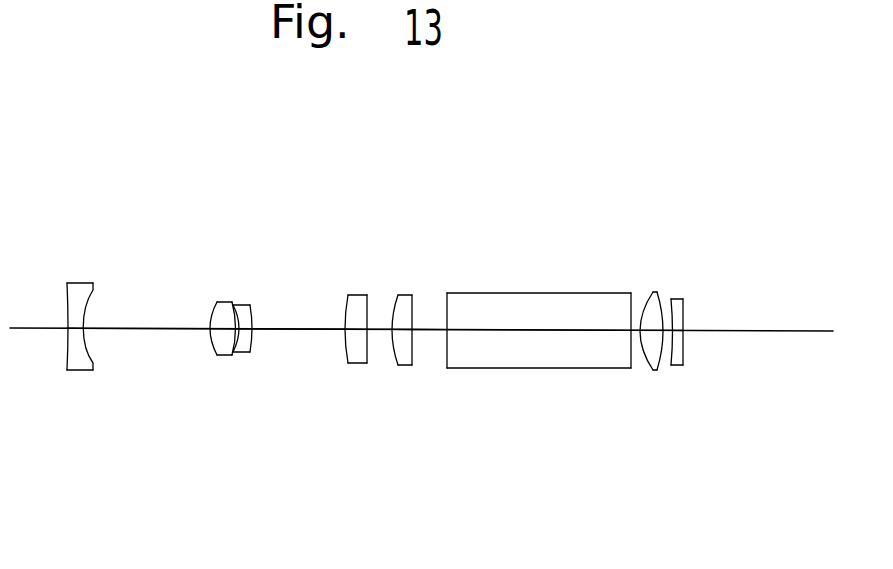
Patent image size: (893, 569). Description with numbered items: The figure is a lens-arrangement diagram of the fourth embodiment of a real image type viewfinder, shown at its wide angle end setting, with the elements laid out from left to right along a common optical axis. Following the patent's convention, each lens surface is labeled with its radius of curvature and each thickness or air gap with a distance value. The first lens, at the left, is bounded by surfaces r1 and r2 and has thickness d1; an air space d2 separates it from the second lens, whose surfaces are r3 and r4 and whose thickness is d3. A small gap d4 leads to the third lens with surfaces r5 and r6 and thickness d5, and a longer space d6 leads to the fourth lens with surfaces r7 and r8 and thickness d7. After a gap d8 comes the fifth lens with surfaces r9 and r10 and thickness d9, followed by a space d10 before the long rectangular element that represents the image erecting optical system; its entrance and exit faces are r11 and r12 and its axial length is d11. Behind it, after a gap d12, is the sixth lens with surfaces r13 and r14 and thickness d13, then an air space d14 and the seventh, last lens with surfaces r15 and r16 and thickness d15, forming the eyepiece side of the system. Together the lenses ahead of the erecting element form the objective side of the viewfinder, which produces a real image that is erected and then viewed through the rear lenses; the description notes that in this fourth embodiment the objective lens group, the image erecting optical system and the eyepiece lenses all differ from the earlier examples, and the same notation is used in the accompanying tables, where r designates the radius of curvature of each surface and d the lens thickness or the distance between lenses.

The radius of curvature of first lens surface r1 is at (67, 283).
The radius of curvature of second lens surface r2 is at (93, 283).
The radius of curvature of third lens surface r3 is at (216, 302).
The radius of curvature of fourth lens surface r4 is at (230, 303).
The radius of curvature of fifth lens surface r5 is at (252, 265).
The radius of curvature of sixth lens surface r6 is at (250, 305).
The radius of curvature of seventh lens surface r7 is at (348, 295).
The radius of curvature of eighth lens surface r8 is at (367, 295).
The radius of curvature of ninth lens surface r9 is at (399, 295).
The radius of curvature of tenth lens surface r10 is at (412, 295).
The radius of curvature of eleventh lens surface r11 is at (457, 275).
The radius of curvature of twelfth lens surface r12 is at (631, 293).
The radius of curvature of thirteenth lens surface r13 is at (656, 277).
The radius of curvature of fourteenth lens surface r14 is at (677, 291).
The radius of curvature of fifteenth lens surface r15 is at (699, 275).
The radius of curvature of sixteenth lens surface r16 is at (719, 289).
The thickness of first lens d1 is at (74, 329).
The distance between first and second lenses d2 is at (147, 329).
The thickness of second lens d3 is at (225, 329).
The distance between second and third lenses d4 is at (245, 404).
The thickness of third lens d5 is at (262, 390).
The distance between third and fourth lenses d6 is at (298, 404).
The thickness of fourth lens d7 is at (355, 330).
The distance between fourth and fifth lenses d8 is at (379, 405).
The thickness of fifth lens d9 is at (404, 391).
The distance between fifth lens and image erecting element d10 is at (437, 406).
The thickness of image erecting element d11 is at (538, 331).
The distance between image erecting element and sixth lens d12 is at (634, 331).
The thickness of sixth lens d13 is at (659, 393).
The distance between sixth and seventh lenses d14 is at (684, 407).
The thickness of seventh lens d15 is at (703, 393).